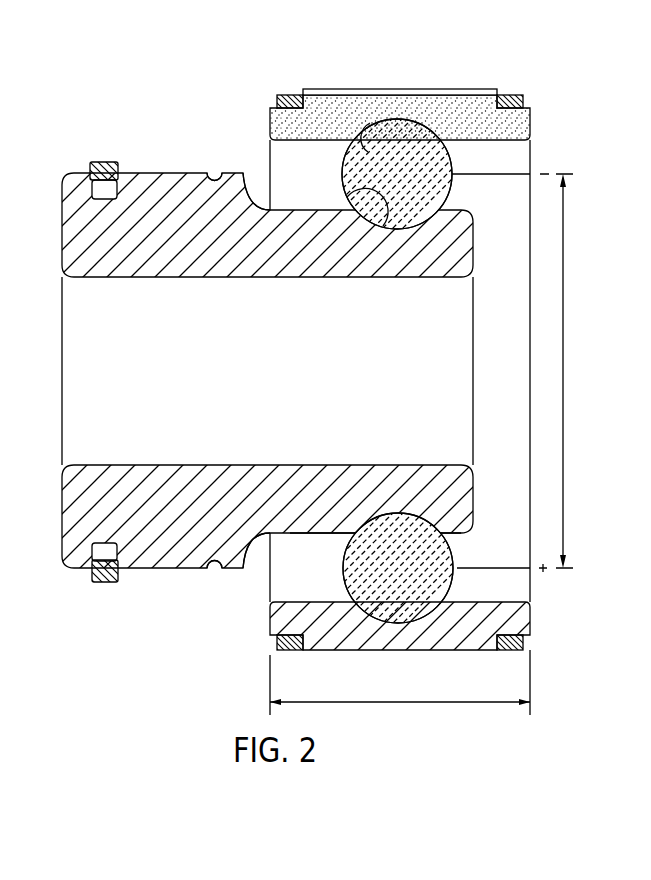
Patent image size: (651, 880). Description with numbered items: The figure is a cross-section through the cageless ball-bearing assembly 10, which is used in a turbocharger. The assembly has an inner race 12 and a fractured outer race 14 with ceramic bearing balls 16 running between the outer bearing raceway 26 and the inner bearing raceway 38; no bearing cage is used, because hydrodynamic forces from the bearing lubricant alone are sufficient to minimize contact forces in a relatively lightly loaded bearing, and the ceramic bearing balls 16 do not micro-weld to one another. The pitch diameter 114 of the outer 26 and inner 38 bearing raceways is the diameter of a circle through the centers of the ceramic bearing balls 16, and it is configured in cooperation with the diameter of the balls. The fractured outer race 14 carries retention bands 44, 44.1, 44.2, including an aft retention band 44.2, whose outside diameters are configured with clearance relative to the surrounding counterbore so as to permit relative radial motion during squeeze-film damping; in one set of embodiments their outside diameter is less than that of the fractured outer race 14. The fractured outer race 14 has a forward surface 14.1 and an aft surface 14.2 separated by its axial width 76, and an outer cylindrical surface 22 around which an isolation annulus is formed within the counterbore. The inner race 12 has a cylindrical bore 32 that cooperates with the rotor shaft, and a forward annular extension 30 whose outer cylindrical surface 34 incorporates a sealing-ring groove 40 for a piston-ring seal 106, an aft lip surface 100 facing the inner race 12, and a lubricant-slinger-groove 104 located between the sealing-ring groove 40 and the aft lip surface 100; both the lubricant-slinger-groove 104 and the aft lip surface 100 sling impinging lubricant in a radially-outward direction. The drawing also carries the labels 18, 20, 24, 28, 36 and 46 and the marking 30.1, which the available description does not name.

The ball-bearing assembly 10 is at (553, 90).
The inner race 12 is at (291, 376).
The fractured outer race 14 is at (400, 372).
The forward surface of the fractured outer race 14.1 is at (269, 124).
The aft surface of the fractured outer race 14.2 is at (532, 123).
The ceramic bearing balls 16 is at (382, 371).
The sliding layer 18 is at (400, 101).
The cover plate 20 is at (407, 90).
The outer cylindrical surface of the fractured outer race 22 is at (368, 650).
The sliding material 24 is at (345, 105).
The outer bearing raceway 26 is at (346, 155).
The first shoulder of inner ring 28 is at (420, 465).
The forward annular extension 30 is at (243, 608).
The mounting direction 30.1 is at (45, 586).
The cylindrical bore 32 is at (325, 465).
The outer cylindrical surface of the forward annular extension 34 is at (138, 571).
The inner raceway 36 is at (316, 534).
The inner bearing raceway 38 is at (352, 200).
The sealing-ring groove 40 is at (91, 567).
The retention bands 44 is at (408, 78).
The retention band 44.1 is at (285, 94).
The aft retention band 44.2 is at (508, 94).
The spacer elements 46 is at (292, 638).
The axial width 76 is at (396, 702).
The aft lip surface 100 is at (254, 200).
The lubricant-slinger-groove 104 is at (213, 183).
The piston-ring seal 106 is at (105, 162).
The pitch diameter 114 is at (563, 395).